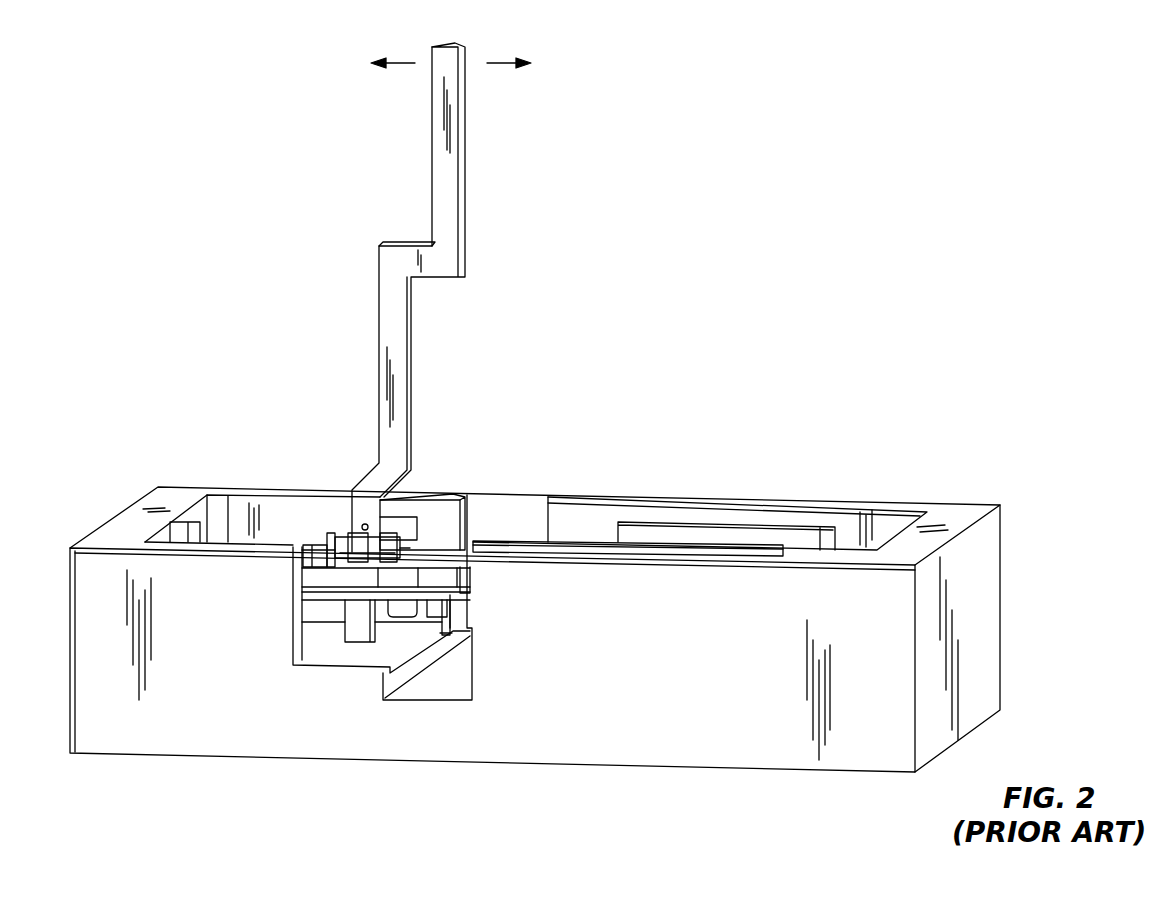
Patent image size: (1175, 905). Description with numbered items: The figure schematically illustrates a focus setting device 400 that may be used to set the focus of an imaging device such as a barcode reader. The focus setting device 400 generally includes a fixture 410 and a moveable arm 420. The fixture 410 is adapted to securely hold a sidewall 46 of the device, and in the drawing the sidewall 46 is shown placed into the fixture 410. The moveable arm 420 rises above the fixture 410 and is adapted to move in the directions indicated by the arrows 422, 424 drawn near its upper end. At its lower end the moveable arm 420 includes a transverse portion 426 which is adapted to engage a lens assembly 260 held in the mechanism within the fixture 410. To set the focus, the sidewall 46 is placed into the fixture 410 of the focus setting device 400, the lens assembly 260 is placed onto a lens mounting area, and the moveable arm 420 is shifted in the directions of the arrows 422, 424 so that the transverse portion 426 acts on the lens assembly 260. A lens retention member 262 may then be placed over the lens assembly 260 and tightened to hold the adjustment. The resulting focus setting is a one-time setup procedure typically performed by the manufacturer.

The focus setting device 400 is at (803, 358).
The fixture 410 is at (645, 692).
The moveable arm 420 is at (448, 190).
The arrow 422 is at (405, 63).
The arrow 424 is at (497, 63).
The transverse portion 426 is at (410, 528).
The sidewall 46 is at (448, 556).
The lens assembly 260 is at (338, 540).
The lens retention member 262 is at (360, 552).